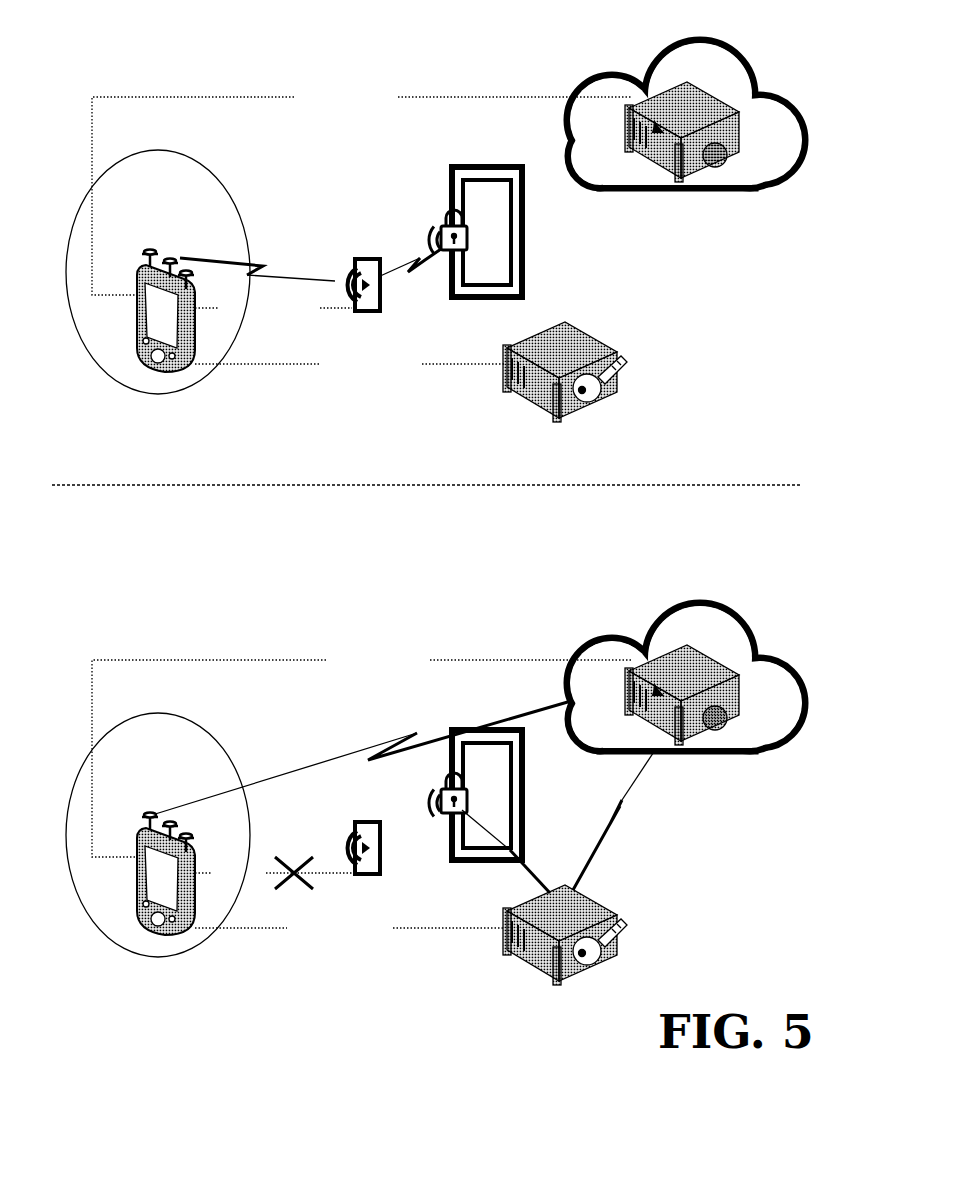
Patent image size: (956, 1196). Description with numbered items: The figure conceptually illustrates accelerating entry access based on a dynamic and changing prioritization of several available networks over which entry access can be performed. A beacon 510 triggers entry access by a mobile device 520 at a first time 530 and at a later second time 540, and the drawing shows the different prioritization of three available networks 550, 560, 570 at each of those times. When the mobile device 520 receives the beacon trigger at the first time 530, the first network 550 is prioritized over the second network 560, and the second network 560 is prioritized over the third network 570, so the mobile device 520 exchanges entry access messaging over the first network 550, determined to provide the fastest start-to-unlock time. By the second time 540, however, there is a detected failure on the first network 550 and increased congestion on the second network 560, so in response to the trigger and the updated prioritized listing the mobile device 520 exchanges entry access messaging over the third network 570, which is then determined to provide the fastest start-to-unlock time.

The beacon 510 is at (149, 131).
The mobile device 520 is at (166, 602).
The first time 530 is at (132, 59).
The second time 540 is at (124, 611).
The first network 550 is at (287, 574).
The second network 560 is at (411, 653).
The third network 570 is at (549, 395).